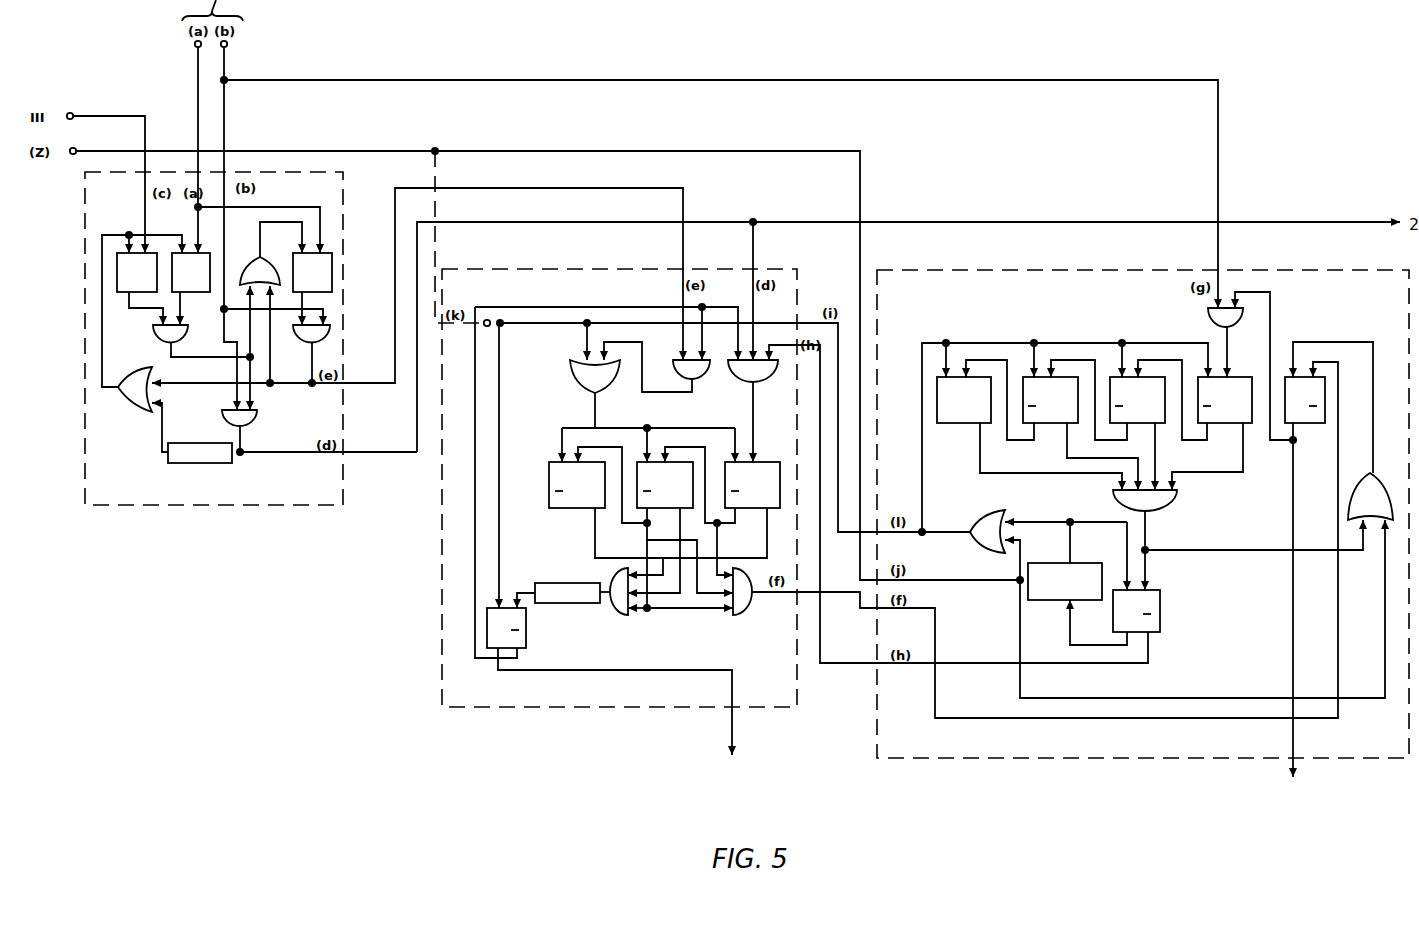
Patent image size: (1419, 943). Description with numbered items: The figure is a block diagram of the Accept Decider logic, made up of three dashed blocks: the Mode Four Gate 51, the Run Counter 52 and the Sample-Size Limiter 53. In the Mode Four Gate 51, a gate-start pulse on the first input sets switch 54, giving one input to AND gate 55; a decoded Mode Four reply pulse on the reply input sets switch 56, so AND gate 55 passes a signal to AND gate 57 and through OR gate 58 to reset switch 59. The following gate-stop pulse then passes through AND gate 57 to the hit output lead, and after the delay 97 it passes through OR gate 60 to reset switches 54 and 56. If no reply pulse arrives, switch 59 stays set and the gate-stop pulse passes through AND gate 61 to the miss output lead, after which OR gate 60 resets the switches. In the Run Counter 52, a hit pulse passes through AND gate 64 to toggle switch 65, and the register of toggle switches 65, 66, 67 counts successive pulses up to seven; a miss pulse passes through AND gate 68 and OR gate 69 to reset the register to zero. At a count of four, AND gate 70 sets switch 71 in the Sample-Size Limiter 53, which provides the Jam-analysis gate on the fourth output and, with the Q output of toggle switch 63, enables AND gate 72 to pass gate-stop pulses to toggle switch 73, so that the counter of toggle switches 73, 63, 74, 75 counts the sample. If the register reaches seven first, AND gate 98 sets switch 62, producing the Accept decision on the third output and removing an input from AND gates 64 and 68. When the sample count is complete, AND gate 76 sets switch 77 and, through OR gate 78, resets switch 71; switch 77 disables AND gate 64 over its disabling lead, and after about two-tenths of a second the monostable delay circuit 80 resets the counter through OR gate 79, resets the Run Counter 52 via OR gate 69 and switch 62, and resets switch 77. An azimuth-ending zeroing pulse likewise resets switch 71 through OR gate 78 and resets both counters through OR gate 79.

The mode 4 gate 51 is at (85, 460).
The Run Counter 52 is at (440, 592).
The Sample-Size Limiter 53 is at (875, 707).
The switch 54 is at (207, 292).
The AND gate 55 is at (153, 336).
The switch 56 is at (117, 263).
The AND gate 57 is at (258, 418).
The OR gate 58 is at (252, 258).
The switch 59 is at (333, 278).
The OR gate 60 is at (127, 403).
The AND gate 61 is at (331, 334).
The switch 62 is at (528, 631).
The toggle switch 63 is at (1135, 426).
The AND gate 64 is at (774, 379).
The toggle switch 65 is at (755, 509).
The toggle switch 66 is at (672, 509).
The toggle switch 67 is at (562, 509).
The AND gate 68 is at (708, 378).
The OR gate 69 is at (574, 385).
The AND gate 70 is at (753, 611).
The switch 71 is at (1302, 426).
The AND gate 72 is at (1208, 318).
The toggle switch 73 is at (1218, 426).
The toggle switch 74 is at (1050, 426).
The toggle switch 75 is at (958, 426).
The AND gate 76 is at (1177, 504).
The switch 77 is at (1160, 616).
The OR gate 78 is at (1383, 489).
The OR gate 79 is at (983, 517).
The monostable delay circuit 80 is at (1052, 601).
The delay 97 is at (195, 443).
The AND gate 98 is at (618, 614).